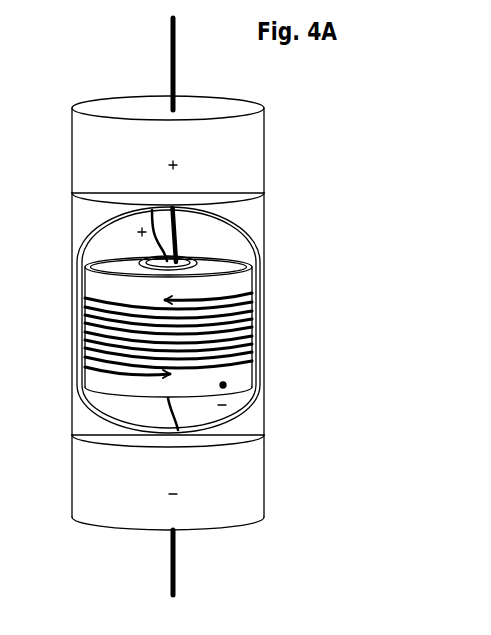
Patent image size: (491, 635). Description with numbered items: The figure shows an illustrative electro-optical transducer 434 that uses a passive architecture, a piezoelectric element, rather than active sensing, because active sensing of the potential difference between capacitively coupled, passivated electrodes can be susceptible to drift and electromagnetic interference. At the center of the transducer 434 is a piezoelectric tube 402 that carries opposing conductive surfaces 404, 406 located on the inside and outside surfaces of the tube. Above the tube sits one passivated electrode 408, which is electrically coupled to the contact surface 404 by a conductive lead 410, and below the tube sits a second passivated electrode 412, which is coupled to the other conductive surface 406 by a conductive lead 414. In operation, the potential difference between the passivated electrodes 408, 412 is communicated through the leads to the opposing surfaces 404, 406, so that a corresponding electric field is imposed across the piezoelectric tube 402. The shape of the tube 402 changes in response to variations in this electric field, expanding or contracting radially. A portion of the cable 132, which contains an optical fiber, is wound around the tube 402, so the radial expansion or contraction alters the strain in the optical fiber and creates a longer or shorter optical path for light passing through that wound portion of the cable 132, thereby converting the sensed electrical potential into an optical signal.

The cable 132 is at (170, 67).
The passivated electrode 408 is at (258, 140).
The electro-optical transducer 434 is at (72, 204).
The piezoelectric tube 402 is at (92, 265).
The conductive surface 406 is at (245, 262).
The conductive surface 404 is at (190, 262).
The conductive lead 410 is at (153, 245).
The conductive lead 414 is at (225, 388).
The passivated electrode 412 is at (255, 502).